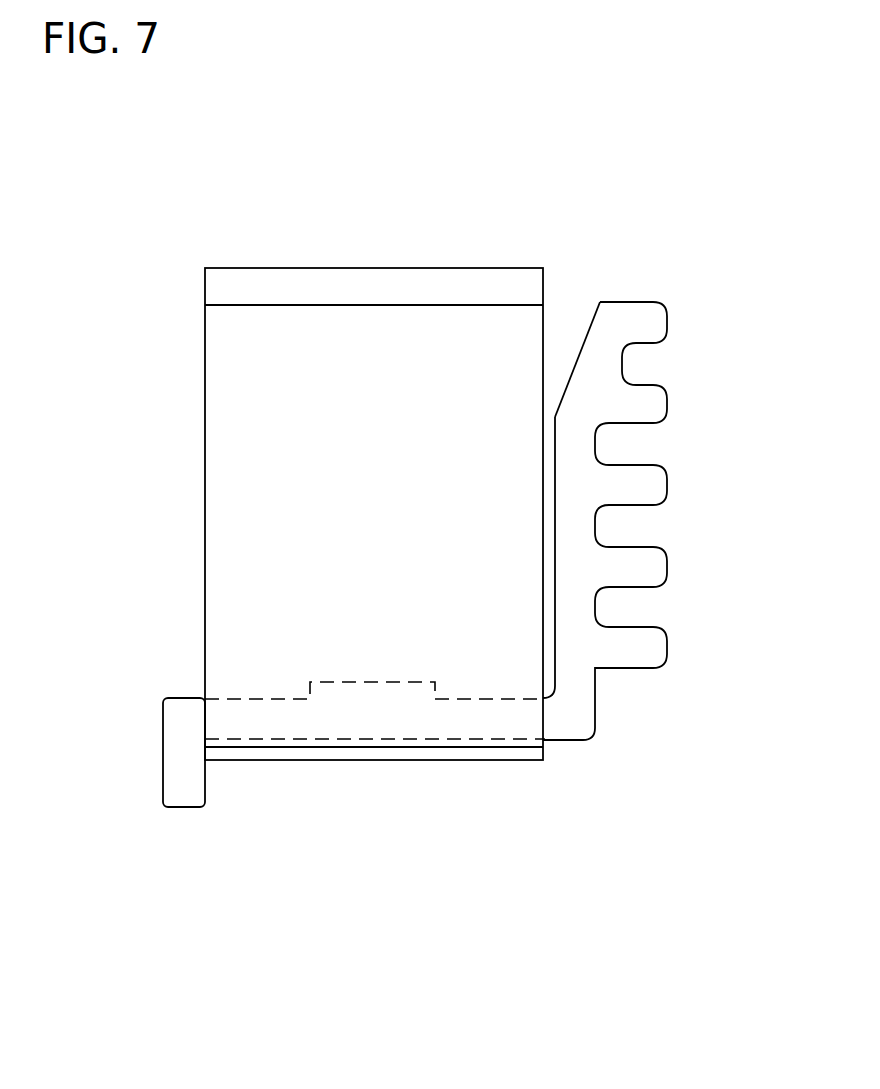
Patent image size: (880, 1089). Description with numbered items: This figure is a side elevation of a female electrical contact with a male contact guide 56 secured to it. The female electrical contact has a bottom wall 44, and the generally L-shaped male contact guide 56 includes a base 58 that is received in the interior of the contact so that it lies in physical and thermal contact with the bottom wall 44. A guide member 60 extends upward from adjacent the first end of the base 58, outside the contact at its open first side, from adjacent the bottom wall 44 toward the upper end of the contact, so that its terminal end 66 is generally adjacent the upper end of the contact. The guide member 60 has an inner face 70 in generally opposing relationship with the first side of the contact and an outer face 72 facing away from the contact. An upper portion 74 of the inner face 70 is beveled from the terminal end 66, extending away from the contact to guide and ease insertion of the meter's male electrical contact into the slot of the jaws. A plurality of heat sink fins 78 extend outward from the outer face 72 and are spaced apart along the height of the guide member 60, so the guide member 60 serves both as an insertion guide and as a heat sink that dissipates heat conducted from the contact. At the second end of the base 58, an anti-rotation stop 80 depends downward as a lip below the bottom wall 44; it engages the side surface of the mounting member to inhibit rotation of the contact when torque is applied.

The bottom wall 44 is at (252, 755).
The male contact guide 56 is at (635, 538).
The base 58 is at (375, 723).
The guide member 60 is at (563, 582).
The terminal end 66 is at (432, 262).
The inner face 70 is at (555, 508).
The outer face 72 is at (598, 678).
The upper portion 74 is at (566, 378).
The heat sink fins 78 is at (653, 323).
The anti-rotation stop 80 is at (168, 750).